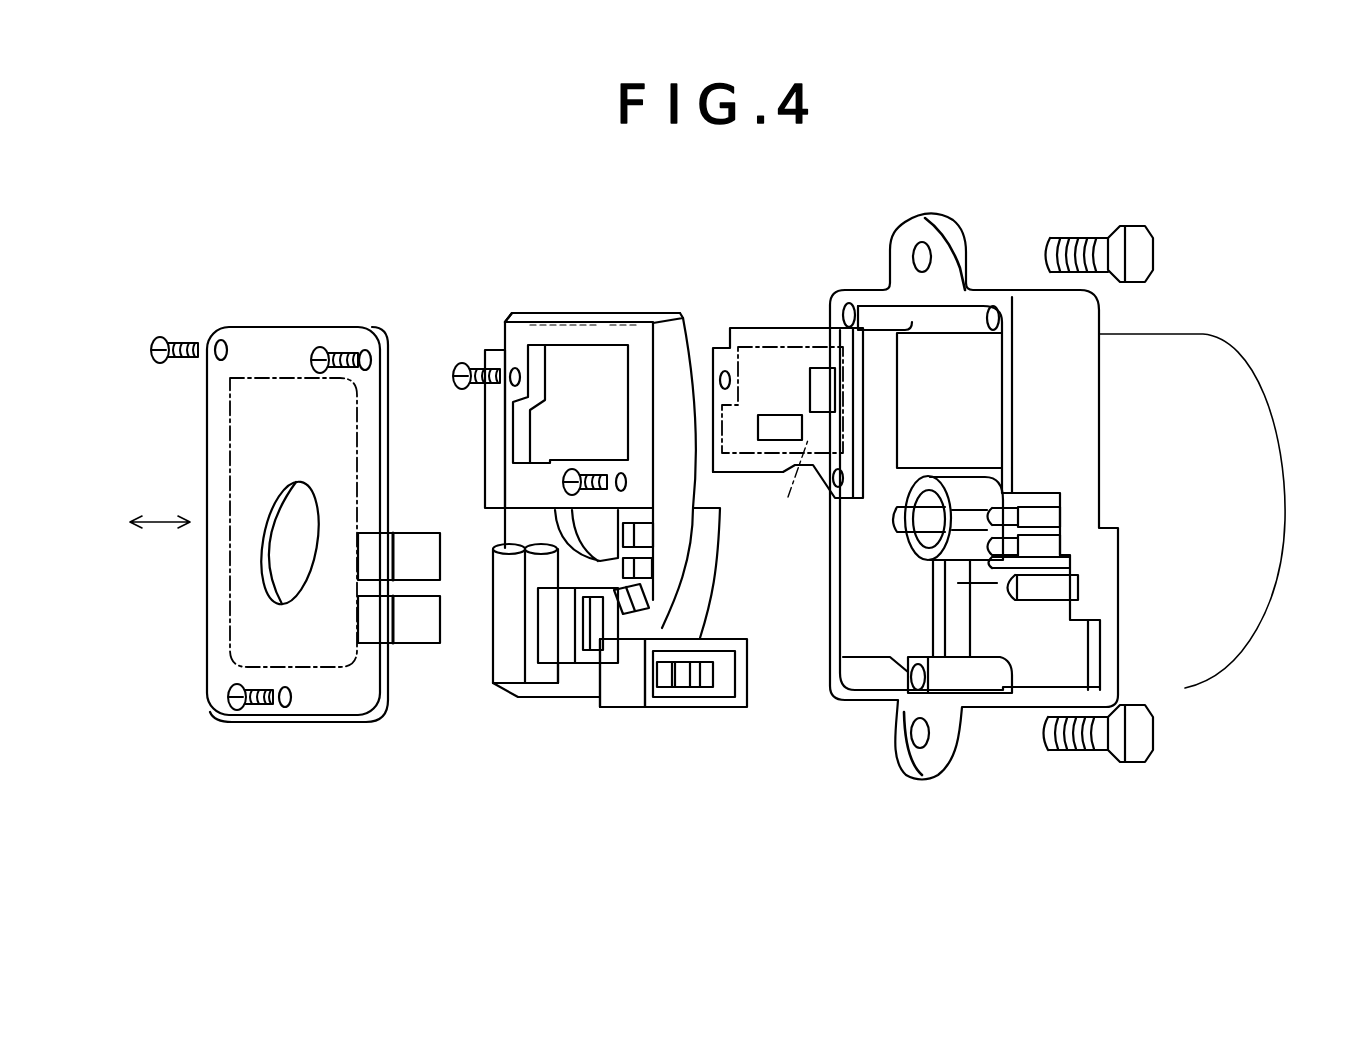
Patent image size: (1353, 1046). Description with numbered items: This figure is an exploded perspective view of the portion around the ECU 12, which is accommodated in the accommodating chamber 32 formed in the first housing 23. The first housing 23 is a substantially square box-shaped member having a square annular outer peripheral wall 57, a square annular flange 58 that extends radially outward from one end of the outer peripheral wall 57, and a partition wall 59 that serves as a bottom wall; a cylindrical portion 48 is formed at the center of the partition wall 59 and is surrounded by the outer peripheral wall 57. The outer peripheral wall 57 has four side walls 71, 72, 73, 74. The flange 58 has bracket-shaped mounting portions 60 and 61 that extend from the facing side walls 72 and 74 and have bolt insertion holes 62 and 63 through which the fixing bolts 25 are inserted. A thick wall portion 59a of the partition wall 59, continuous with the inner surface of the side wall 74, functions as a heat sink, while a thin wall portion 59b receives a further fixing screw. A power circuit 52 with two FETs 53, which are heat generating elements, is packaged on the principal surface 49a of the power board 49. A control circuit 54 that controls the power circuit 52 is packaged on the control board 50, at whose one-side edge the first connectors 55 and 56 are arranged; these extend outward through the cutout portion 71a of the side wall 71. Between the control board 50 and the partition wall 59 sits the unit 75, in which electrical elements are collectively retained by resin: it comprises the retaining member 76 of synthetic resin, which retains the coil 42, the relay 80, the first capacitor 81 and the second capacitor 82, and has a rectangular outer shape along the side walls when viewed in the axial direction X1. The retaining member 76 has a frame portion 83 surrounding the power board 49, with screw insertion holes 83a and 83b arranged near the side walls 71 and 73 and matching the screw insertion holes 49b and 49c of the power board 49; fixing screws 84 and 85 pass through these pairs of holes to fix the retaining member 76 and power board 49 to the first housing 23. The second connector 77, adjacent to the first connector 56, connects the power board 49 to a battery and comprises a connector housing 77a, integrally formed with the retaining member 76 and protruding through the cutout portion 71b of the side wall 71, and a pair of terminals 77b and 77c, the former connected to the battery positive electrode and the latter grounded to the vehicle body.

The ECU 12 is at (708, 243).
The first housing 23 is at (1087, 380).
The fixing bolt 25 is at (1150, 245).
The accommodating chamber 32 is at (927, 333).
The coil 42 is at (605, 622).
The cylindrical portion 48 is at (917, 548).
The power board 49 is at (776, 338).
The principal surface 49a is at (748, 475).
The screw insertion hole 49b is at (833, 486).
The screw insertion hole 49c is at (724, 371).
The control board 50 is at (270, 343).
The power circuit 52 is at (752, 342).
The FET 53 is at (793, 443).
The control circuit 54 is at (326, 668).
The first connector 55 is at (430, 555).
The first connector 56 is at (418, 615).
The outer peripheral wall 57 is at (1083, 417).
The flange 58 is at (953, 713).
The partition wall 59 is at (990, 373).
The thick wall portion 59a is at (948, 347).
The thin wall portion 59b is at (1075, 668).
The mounting portion 60 is at (907, 747).
The mounting portion 61 is at (920, 228).
The bolt insertion hole 62 is at (918, 748).
The bolt insertion hole 63 is at (918, 255).
The side wall 71 is at (1105, 578).
The cutout portion 71a is at (1048, 538).
The cutout portion 71b is at (1085, 625).
The side wall 72 is at (1030, 700).
The side wall 73 is at (862, 620).
The side wall 74 is at (1020, 307).
The unit 75 is at (553, 302).
The retaining member 76 is at (568, 700).
The second connector 77 is at (627, 690).
The connector housing 77a is at (747, 658).
The terminal 77b is at (665, 675).
The terminal 77c is at (697, 675).
The relay 80 is at (556, 655).
The first capacitor 81 is at (543, 560).
The second capacitor 82 is at (500, 577).
The frame portion 83 is at (625, 330).
The screw insertion hole 83a is at (622, 472).
The screw insertion hole 83b is at (510, 368).
The fixing screw 84 is at (572, 470).
The fixing screw 85 is at (465, 368).
The axial direction X1 is at (160, 527).